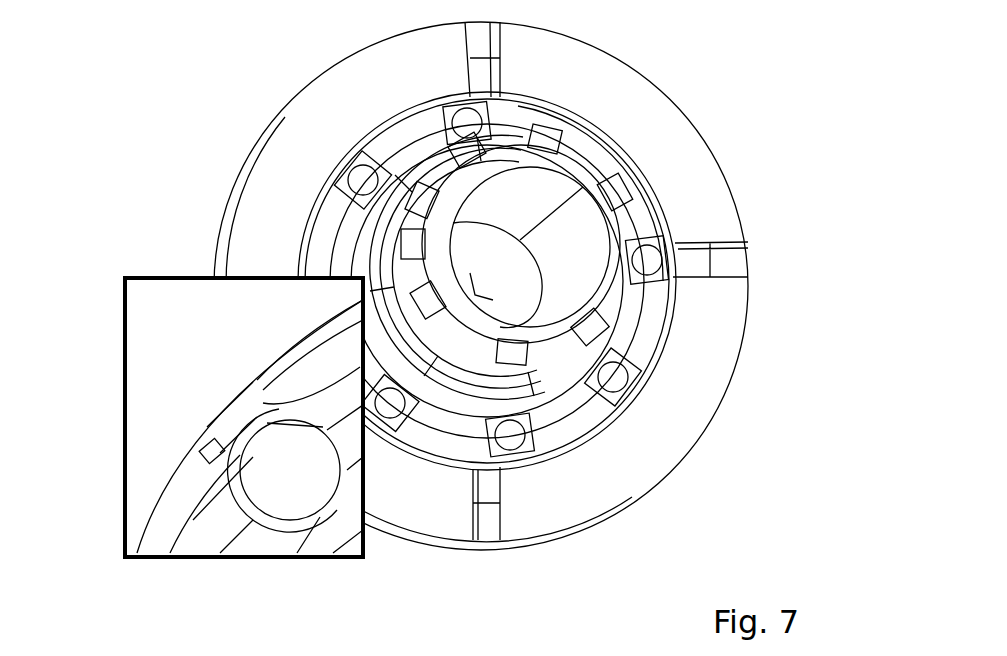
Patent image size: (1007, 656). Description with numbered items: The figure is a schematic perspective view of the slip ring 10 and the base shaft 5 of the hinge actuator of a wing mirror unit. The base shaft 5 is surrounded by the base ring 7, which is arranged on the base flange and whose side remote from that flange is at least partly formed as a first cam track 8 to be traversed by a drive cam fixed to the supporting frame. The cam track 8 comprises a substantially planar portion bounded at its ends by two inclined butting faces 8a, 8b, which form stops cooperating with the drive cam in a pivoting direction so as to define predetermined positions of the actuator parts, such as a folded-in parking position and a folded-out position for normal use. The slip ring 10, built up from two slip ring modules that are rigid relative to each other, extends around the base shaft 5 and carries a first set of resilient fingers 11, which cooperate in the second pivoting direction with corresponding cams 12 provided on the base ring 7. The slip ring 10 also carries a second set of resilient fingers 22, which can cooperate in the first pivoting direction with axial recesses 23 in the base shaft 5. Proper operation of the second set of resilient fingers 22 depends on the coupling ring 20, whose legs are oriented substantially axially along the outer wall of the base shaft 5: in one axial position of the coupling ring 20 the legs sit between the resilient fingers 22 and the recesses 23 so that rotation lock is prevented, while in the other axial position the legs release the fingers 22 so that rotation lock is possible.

The base shaft 5 is at (575, 240).
The base ring 7 is at (220, 258).
The first cam track 8 is at (650, 450).
The inclined butting face 8a is at (492, 527).
The inclined butting face 8b is at (733, 262).
The slip ring 10 is at (633, 323).
The first set of resilient fingers 11 is at (623, 172).
The cams 12 is at (230, 425).
The coupling ring 20 is at (233, 546).
The second set of resilient fingers 22 is at (527, 400).
The axial recesses 23 is at (480, 167).